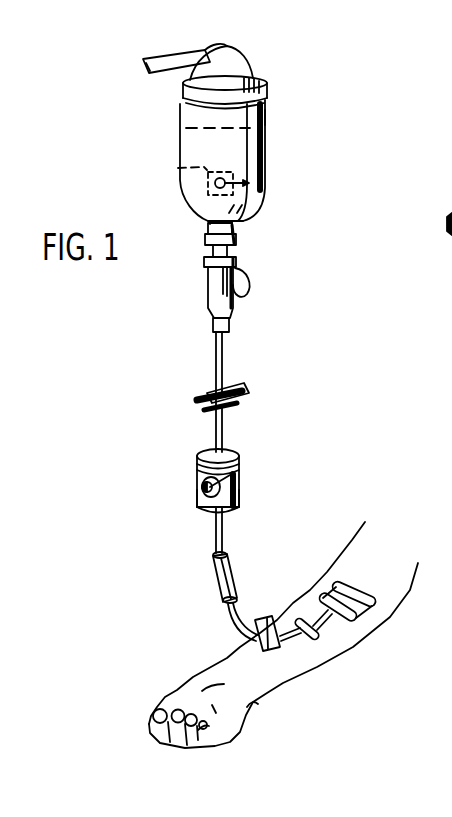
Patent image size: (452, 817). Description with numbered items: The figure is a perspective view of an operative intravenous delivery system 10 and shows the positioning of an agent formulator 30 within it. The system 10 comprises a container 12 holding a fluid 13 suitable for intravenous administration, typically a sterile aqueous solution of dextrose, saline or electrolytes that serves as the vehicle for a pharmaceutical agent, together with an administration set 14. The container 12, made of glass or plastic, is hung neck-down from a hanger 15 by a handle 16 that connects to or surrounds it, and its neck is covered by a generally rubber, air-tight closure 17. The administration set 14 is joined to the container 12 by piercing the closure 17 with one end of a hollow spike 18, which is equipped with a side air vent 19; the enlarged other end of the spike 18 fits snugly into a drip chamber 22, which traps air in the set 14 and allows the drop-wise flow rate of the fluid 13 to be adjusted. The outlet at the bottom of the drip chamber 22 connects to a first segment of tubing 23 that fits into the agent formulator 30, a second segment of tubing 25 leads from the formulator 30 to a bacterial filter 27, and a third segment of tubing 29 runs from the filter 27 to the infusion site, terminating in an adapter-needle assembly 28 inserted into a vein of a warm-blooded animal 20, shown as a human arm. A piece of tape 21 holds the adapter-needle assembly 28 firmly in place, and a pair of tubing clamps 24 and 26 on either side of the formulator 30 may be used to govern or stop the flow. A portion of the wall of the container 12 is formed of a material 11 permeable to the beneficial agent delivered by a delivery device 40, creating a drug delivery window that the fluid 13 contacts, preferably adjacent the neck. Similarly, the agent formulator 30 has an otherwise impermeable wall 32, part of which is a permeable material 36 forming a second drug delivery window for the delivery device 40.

The intravenous delivery system 10 is at (161, 125).
The wall portion 11 is at (178, 168).
The container 12 is at (262, 122).
The fluid 13 is at (258, 128).
The administration set 14 is at (204, 361).
The hanger 15 is at (182, 48).
The handle 16 is at (250, 63).
The closure 17 is at (238, 238).
The hollow spike 18 is at (238, 250).
The side air vent 19 is at (250, 286).
The warm-blooded animal 20 is at (258, 705).
The tape 21 is at (358, 622).
The drip chamber 22 is at (238, 312).
The first segment of tubing 23 is at (226, 356).
The tubing clamp 24 is at (248, 388).
The second segment of tubing 25 is at (212, 537).
The tubing clamp 26 is at (262, 616).
The bacterial filter 27 is at (220, 578).
The adapter-needle assembly 28 is at (303, 620).
The third segment of tubing 29 is at (242, 626).
The agent formulator 30 is at (186, 476).
The wall 32 is at (235, 507).
The permeable material 36 is at (240, 482).
The delivery device 40 is at (270, 188).